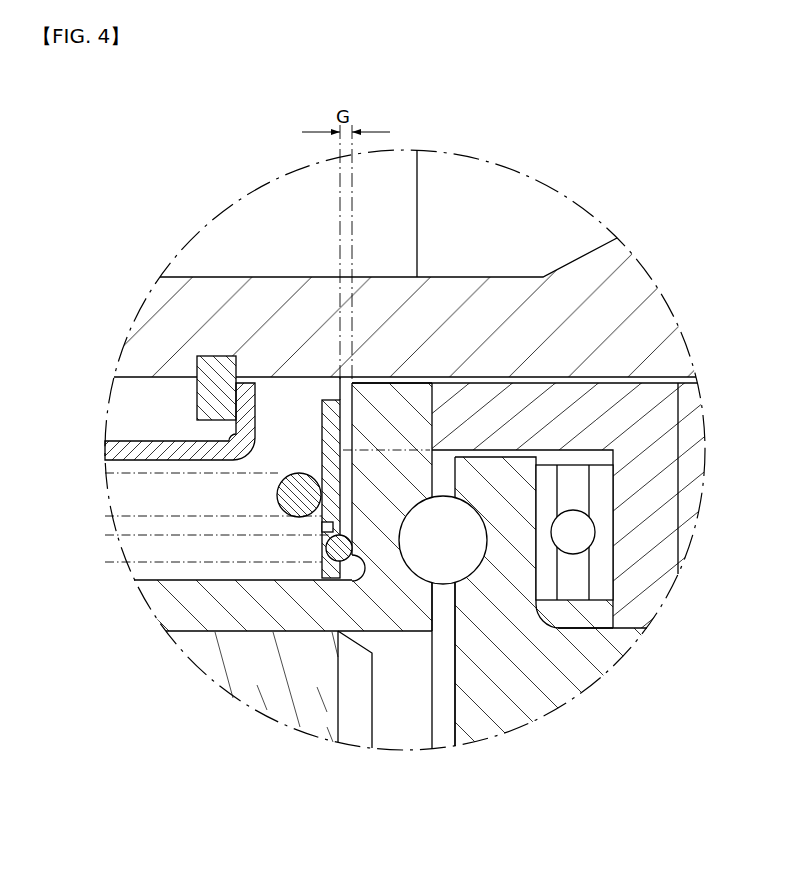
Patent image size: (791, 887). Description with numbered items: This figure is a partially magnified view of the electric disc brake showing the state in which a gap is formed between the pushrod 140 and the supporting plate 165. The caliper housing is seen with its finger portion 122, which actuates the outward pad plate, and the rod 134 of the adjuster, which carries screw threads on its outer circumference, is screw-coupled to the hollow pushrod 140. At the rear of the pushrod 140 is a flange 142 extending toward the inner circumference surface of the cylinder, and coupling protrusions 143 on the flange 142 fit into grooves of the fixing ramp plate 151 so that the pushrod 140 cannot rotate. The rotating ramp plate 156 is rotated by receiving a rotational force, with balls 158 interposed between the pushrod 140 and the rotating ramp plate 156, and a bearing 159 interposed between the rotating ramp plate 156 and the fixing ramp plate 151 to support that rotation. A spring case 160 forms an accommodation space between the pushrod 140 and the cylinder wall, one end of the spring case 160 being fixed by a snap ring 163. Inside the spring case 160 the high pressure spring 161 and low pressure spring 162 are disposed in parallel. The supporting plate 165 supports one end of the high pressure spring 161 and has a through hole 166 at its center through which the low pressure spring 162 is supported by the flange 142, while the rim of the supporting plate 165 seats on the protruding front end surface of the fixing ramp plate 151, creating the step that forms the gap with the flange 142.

The finger portion 122 is at (516, 290).
The rod 134 is at (280, 712).
The pushrod 140 is at (172, 606).
The flange 142 is at (408, 486).
The coupling protrusion 143 is at (410, 393).
The fixing ramp plate 151 is at (665, 453).
The rotating ramp plate 156 is at (577, 670).
The ball 158 is at (467, 572).
The bearing 159 is at (580, 571).
The spring case 160 is at (162, 450).
The high pressure spring 161 is at (280, 497).
The low pressure spring 162 is at (327, 554).
The snap ring 163 is at (224, 362).
The supporting plate 165 is at (330, 402).
The through hole 166 is at (330, 529).